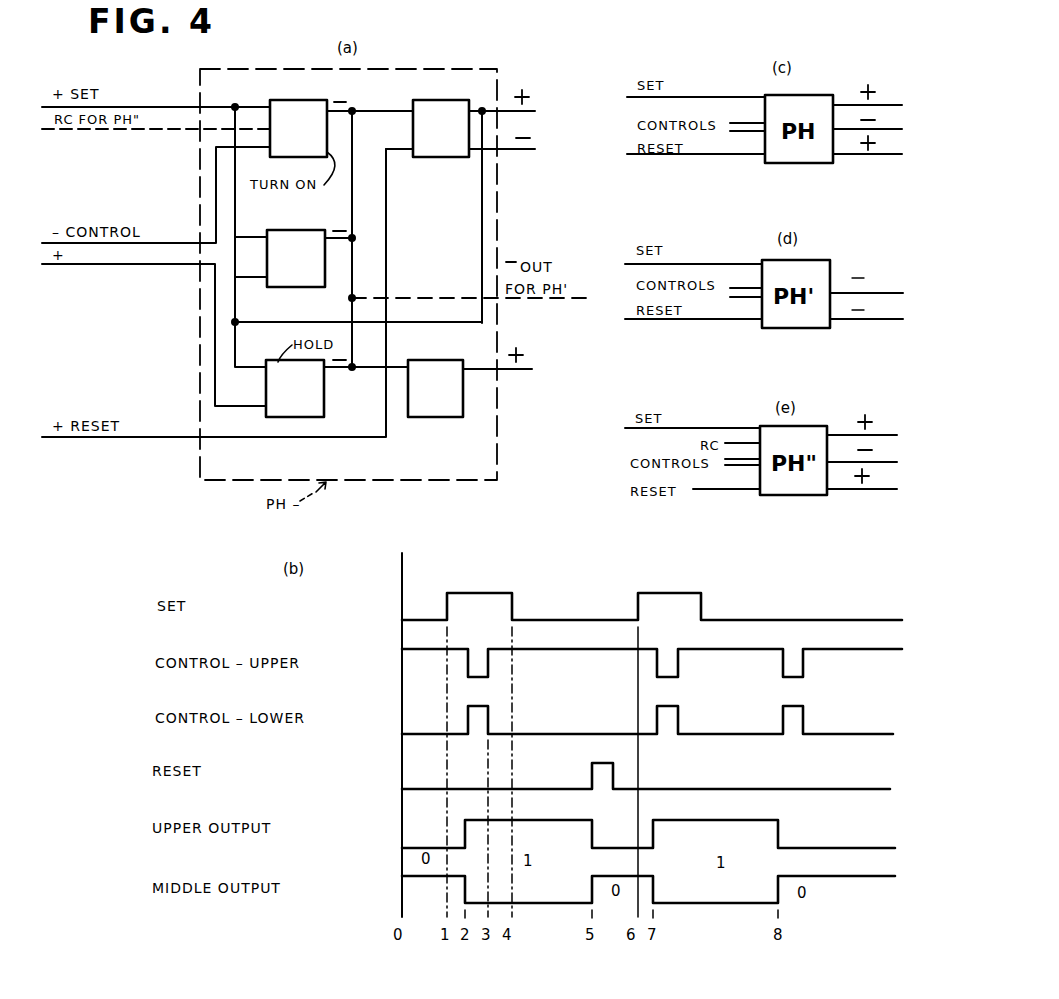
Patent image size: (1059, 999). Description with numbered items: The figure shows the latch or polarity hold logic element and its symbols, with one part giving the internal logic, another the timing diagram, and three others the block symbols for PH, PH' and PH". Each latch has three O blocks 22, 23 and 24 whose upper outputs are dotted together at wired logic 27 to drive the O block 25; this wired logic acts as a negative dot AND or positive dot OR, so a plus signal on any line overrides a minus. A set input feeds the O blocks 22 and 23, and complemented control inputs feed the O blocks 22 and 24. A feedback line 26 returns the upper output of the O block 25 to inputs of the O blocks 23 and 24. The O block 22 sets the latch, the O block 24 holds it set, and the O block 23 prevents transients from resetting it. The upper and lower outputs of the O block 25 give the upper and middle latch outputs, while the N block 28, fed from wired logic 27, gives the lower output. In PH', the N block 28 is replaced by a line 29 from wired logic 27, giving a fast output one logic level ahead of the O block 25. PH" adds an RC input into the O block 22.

The O 22 is at (313, 101).
The O 23 is at (286, 287).
The O 24 is at (324, 400).
The O 25 is at (455, 157).
The feedback line 26 is at (480, 222).
The wired logic 27 is at (379, 112).
The N 28 is at (428, 413).
The line 29 is at (415, 296).